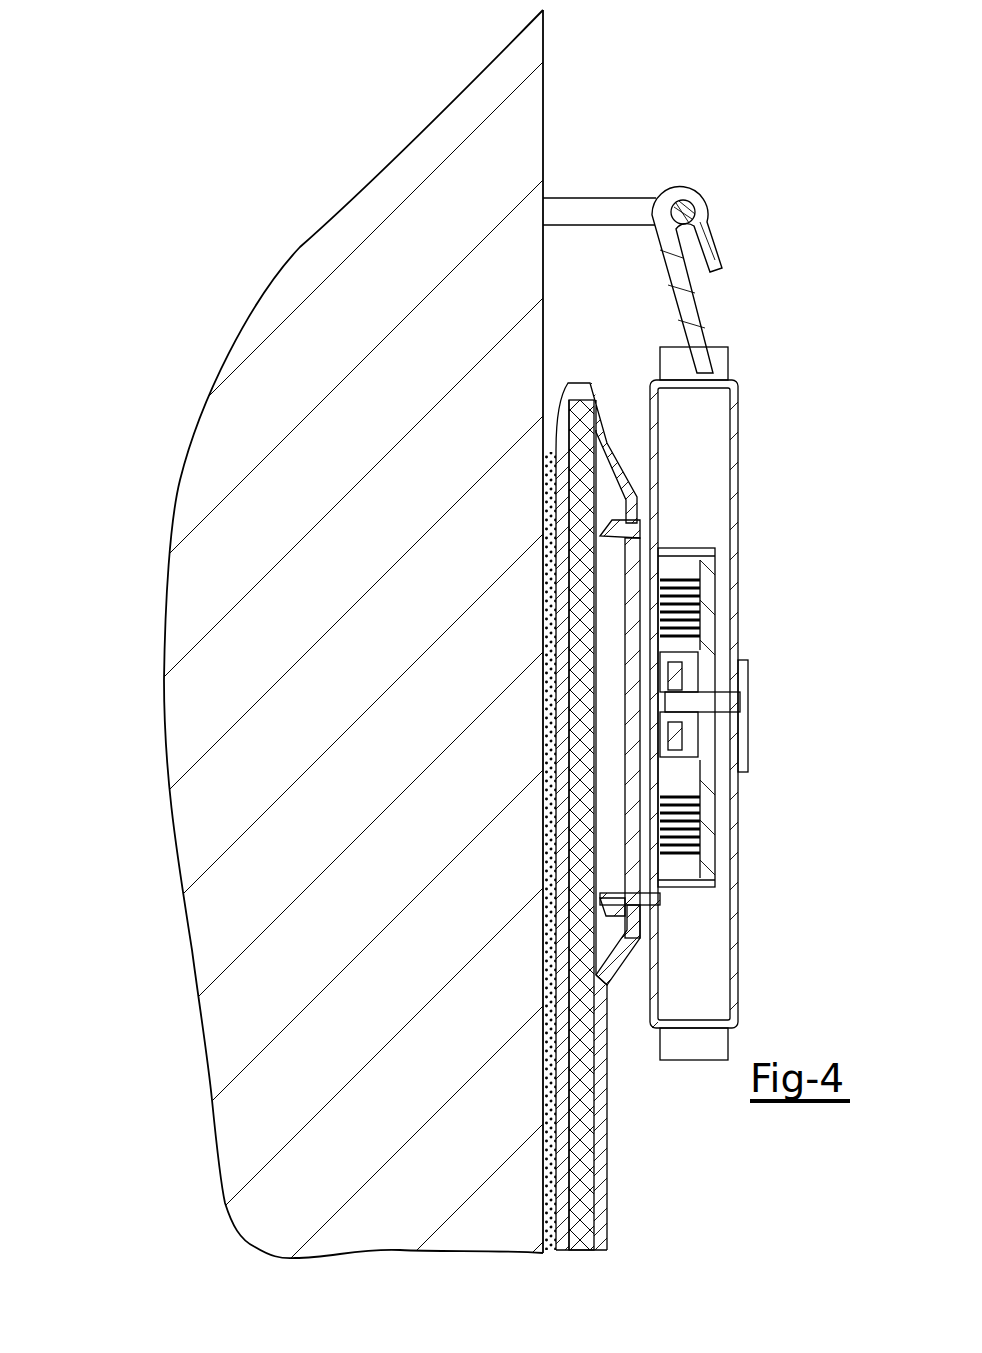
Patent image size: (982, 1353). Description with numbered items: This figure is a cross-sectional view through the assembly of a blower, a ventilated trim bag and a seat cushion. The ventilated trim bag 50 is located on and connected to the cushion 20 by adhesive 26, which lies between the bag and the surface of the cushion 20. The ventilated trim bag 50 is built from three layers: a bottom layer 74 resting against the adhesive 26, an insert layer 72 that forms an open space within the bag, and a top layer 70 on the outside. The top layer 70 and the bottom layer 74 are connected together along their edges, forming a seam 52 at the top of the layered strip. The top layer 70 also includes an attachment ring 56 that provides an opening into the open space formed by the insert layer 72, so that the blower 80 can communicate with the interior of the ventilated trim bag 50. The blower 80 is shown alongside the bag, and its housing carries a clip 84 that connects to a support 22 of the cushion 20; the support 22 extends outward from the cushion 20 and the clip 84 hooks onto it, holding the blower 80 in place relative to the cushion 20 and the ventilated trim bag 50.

The cushion 20 is at (200, 493).
The support 22 is at (603, 198).
The adhesive 26 is at (535, 626).
The ventilated trim bag 50 is at (624, 374).
The seam 52 is at (590, 380).
The attachment ring 56 is at (655, 510).
The top layer 70 is at (607, 1208).
The insert layer 72 is at (585, 1130).
The bottom layer 74 is at (545, 762).
The blower 80 is at (738, 608).
The clip 84 is at (700, 328).